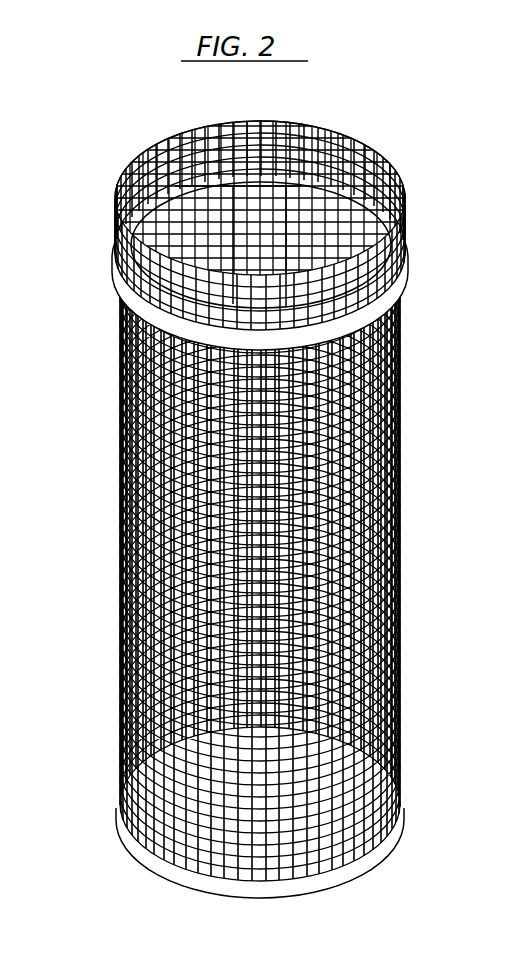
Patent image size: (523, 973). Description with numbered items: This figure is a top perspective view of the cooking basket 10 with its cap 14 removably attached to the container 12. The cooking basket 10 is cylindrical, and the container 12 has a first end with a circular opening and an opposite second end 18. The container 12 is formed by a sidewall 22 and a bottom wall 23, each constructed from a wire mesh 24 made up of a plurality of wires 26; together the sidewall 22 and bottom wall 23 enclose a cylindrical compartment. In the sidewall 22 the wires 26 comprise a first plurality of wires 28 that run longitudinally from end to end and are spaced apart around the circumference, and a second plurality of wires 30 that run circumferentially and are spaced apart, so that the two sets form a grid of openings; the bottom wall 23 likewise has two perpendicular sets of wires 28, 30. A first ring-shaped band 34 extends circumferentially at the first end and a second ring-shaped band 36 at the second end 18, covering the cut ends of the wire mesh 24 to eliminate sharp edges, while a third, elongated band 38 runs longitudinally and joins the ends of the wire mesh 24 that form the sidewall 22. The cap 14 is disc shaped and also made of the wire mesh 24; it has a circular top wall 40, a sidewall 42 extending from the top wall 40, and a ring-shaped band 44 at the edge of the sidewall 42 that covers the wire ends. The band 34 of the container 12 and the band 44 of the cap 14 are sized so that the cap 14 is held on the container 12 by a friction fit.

The cooking basket 10 is at (96, 224).
The container 12 is at (390, 497).
The cap 14 is at (343, 134).
The second end 18 is at (367, 853).
The sidewall 22 is at (390, 560).
The bottom wall 23 is at (216, 840).
The wire mesh 24 is at (355, 415).
The wires 26 is at (313, 417).
The first plurality of wires 28 is at (327, 647).
The second plurality of wires 30 is at (331, 700).
The first ring-shaped band 34 is at (393, 262).
The second ring-shaped band 36 is at (303, 870).
The third elongated band 38 is at (257, 218).
The top wall 40 is at (243, 150).
The sidewall 42 is at (190, 143).
The ring-shaped band 44 is at (370, 303).